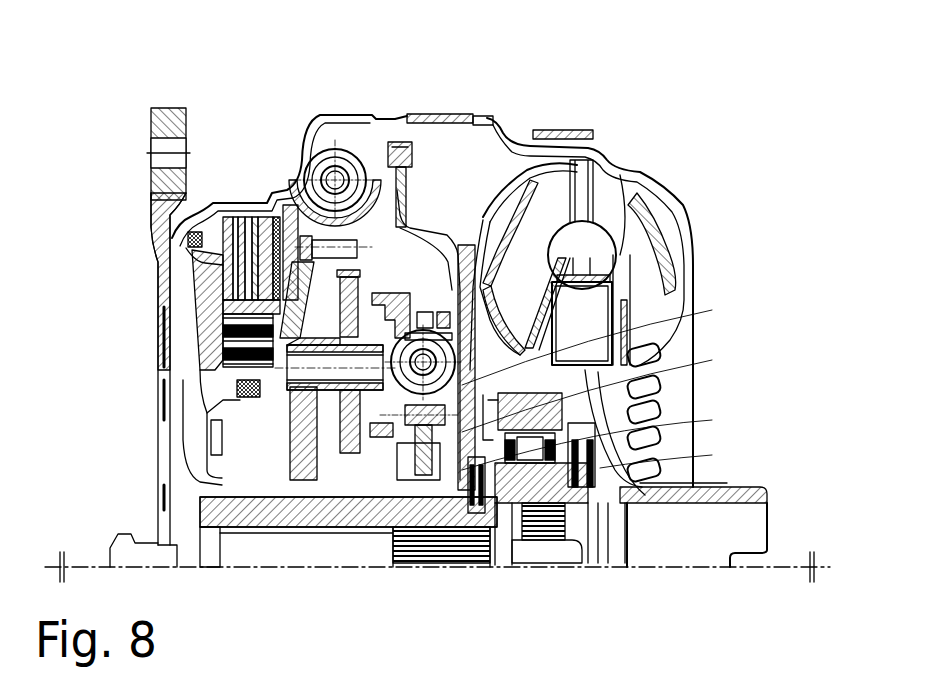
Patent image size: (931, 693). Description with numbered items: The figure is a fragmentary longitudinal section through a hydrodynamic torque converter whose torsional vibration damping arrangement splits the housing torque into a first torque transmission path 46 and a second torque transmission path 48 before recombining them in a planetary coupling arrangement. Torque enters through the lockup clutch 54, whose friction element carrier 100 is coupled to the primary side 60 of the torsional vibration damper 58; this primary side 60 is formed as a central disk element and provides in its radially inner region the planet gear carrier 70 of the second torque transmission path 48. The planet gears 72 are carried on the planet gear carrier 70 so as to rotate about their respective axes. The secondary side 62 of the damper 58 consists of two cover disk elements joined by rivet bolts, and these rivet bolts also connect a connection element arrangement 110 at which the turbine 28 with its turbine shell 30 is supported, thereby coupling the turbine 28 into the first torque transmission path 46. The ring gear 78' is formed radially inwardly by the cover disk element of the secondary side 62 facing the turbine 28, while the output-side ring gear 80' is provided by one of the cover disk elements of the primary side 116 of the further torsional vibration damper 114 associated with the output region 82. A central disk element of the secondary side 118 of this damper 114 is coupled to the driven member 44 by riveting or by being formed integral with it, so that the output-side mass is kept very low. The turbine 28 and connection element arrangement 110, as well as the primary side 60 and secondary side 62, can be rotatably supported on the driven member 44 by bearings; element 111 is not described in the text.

The turbine 28 is at (595, 148).
The turbine shell 30 is at (600, 387).
The driven member 44 is at (370, 513).
The first torque transmission path 46 is at (294, 112).
The second torque transmission path 48 is at (283, 463).
The lockup clutch 54 is at (241, 182).
The torsional vibration damper 58 is at (334, 104).
The primary side 60 is at (340, 283).
The secondary side 62 is at (398, 117).
The planet gear carrier 70 is at (245, 420).
The planet gears 72 is at (620, 320).
The ring gear 78' is at (427, 249).
The ring gear 80' is at (597, 216).
The output region 82 is at (341, 513).
The friction element carrier 100 is at (285, 260).
The connection element arrangement 110 is at (412, 300).
The housing flange 111 is at (620, 463).
The torsional vibration damper 114 is at (610, 433).
The primary side 116 is at (440, 277).
The secondary side 118 is at (453, 527).